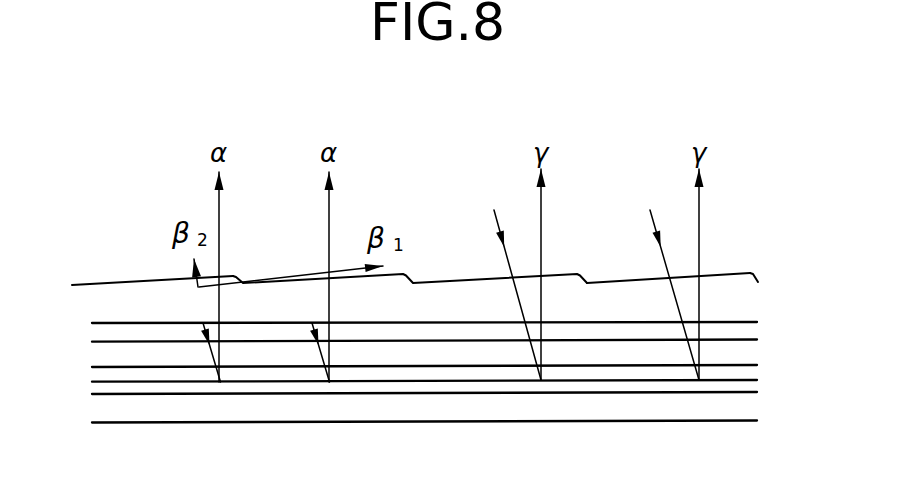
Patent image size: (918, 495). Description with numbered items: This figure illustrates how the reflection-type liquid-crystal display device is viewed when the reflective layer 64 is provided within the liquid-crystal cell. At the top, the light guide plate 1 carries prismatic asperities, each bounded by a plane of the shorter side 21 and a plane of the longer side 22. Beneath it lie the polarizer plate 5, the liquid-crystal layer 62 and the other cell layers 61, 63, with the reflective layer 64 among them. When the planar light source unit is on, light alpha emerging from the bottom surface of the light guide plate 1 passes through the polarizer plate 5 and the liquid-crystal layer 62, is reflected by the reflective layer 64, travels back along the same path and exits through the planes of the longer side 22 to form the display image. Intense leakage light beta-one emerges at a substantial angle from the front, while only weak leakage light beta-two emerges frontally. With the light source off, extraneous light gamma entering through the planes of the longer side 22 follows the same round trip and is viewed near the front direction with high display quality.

The light guide plate 1 is at (753, 302).
The polarizer plate 5 is at (755, 332).
The plane of the shorter side 21 is at (413, 282).
The plane of the longer side 22 is at (130, 280).
The first dielectric layer 61 is at (757, 360).
The liquid-crystal layer 62 is at (757, 373).
The reflective layer 63 is at (757, 407).
The reflective layer 64 is at (757, 387).